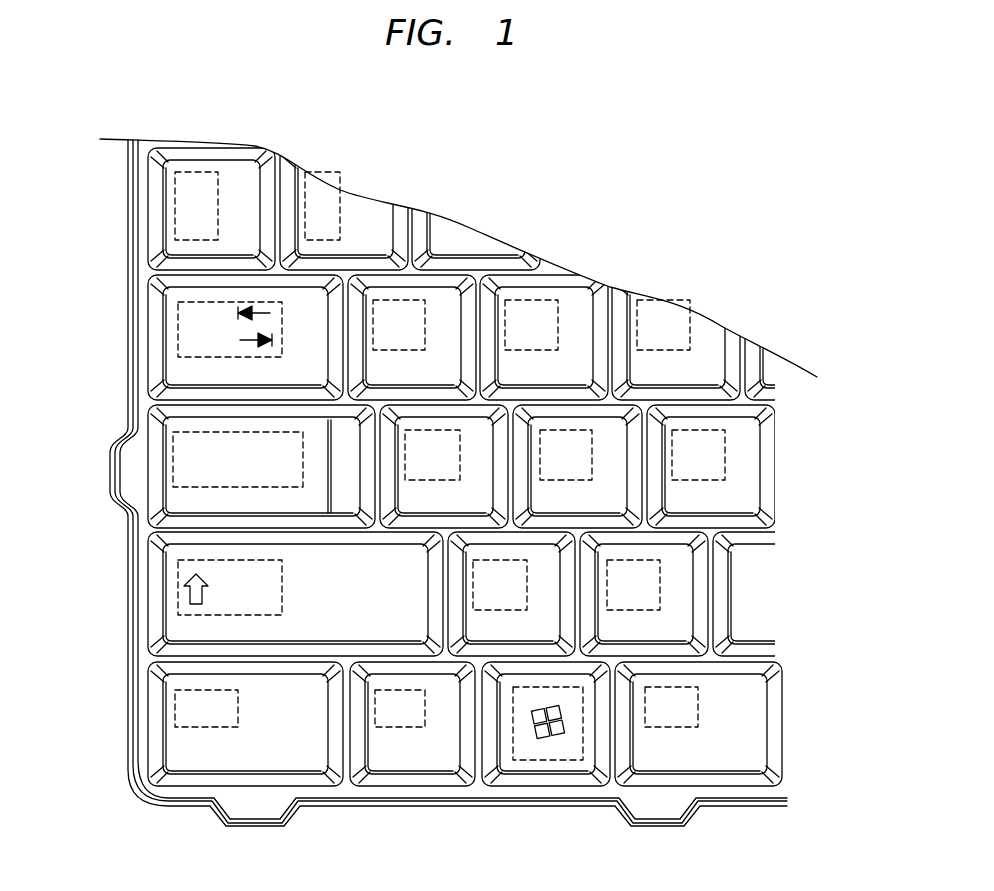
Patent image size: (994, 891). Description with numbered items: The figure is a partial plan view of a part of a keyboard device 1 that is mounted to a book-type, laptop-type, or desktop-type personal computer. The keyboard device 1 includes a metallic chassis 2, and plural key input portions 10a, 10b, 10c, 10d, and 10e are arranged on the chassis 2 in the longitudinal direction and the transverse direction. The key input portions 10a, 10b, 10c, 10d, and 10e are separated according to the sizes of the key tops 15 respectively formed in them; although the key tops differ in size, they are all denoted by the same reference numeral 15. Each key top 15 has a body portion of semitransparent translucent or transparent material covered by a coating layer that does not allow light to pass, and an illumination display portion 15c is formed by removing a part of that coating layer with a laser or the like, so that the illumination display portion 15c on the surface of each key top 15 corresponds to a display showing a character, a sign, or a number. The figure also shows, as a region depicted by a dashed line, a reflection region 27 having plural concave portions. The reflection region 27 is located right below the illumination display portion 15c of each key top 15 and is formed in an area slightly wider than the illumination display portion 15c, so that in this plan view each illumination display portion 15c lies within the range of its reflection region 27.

The keyboard device 1 is at (690, 237).
The chassis 2 is at (448, 808).
The key input portion 10a is at (360, 192).
The key input portion 10b is at (725, 755).
The key input portion 10c is at (178, 355).
The key input portion 10d is at (192, 493).
The key input portion 10e is at (180, 628).
The key top 15 is at (180, 378).
The illumination display portion 15c is at (705, 448).
The reflection region 27 is at (178, 325).